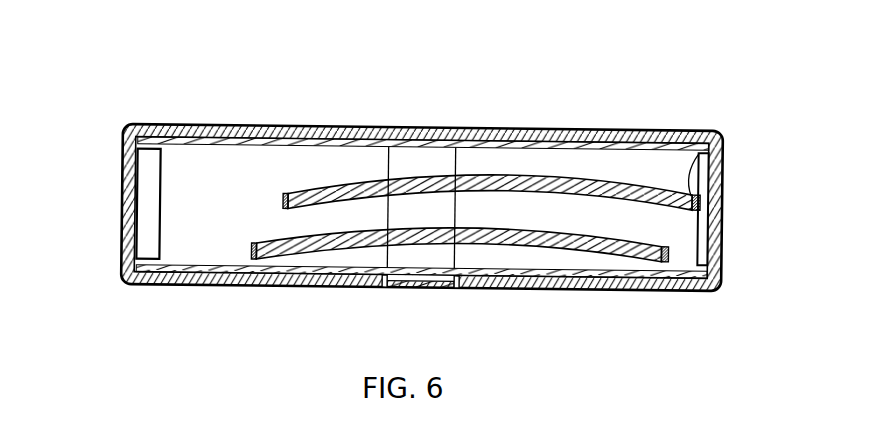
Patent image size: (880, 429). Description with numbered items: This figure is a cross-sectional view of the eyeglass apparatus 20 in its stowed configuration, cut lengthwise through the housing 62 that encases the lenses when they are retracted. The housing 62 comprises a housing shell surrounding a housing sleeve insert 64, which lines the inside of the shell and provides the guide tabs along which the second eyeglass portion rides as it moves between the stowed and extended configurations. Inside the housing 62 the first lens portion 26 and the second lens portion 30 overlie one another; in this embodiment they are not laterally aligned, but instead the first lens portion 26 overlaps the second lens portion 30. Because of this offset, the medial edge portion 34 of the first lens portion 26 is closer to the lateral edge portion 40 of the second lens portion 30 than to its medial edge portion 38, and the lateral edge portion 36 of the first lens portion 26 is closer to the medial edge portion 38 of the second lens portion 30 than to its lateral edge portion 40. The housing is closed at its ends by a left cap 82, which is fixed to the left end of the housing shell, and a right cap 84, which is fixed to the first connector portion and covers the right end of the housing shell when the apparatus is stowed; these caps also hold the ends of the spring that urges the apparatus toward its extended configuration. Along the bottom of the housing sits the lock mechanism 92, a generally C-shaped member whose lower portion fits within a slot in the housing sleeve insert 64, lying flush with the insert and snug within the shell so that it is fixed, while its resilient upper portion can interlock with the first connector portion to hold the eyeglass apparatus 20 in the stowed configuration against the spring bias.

The eyeglass apparatus 20 is at (420, 194).
The first lens portion 26 is at (489, 145).
The second lens portion 30 is at (466, 282).
The medial edge portion 34 is at (284, 192).
The lateral edge portion 36 is at (698, 130).
The medial edge portion 38 is at (664, 262).
The lateral edge portion 40 is at (263, 286).
The housing 62 is at (193, 120).
The housing sleeve insert 64 is at (217, 143).
The left cap 82 is at (128, 212).
The right cap 84 is at (722, 211).
The lock mechanism 92 is at (410, 295).